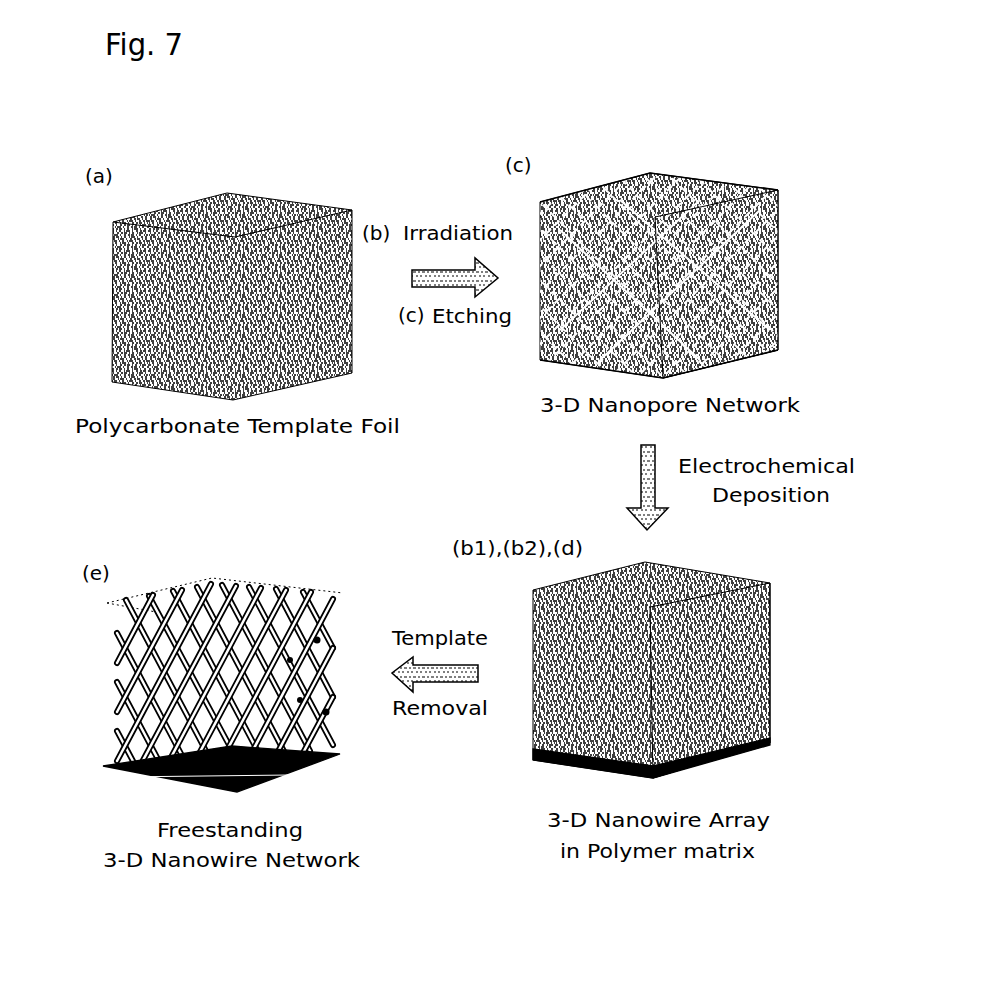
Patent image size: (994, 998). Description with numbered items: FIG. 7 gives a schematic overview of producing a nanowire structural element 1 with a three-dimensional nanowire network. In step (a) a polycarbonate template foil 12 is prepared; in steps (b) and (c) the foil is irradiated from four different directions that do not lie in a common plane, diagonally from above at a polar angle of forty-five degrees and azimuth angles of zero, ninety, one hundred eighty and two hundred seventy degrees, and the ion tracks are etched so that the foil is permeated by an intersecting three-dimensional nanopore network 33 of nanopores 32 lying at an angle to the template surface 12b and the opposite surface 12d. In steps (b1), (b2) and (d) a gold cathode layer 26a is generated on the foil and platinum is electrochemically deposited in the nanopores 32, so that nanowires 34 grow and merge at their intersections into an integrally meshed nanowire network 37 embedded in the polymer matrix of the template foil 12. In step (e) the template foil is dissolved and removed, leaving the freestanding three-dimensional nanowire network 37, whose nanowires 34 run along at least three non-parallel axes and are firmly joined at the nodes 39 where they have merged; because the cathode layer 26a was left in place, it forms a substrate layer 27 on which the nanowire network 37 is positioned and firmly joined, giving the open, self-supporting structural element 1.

The nanowire structural element 1 is at (439, 707).
The template foil 12 is at (112, 310).
The template surface 12b is at (650, 183).
The second surface of template foil 12d is at (734, 367).
The cathode layer 26a is at (770, 745).
The substrate layer 27 is at (340, 758).
The nanopores 32 is at (760, 218).
The nanopore network 33 is at (782, 262).
The nanowires 34 is at (325, 667).
The nanowire network 37 is at (108, 676).
The nodes 39 is at (318, 640).